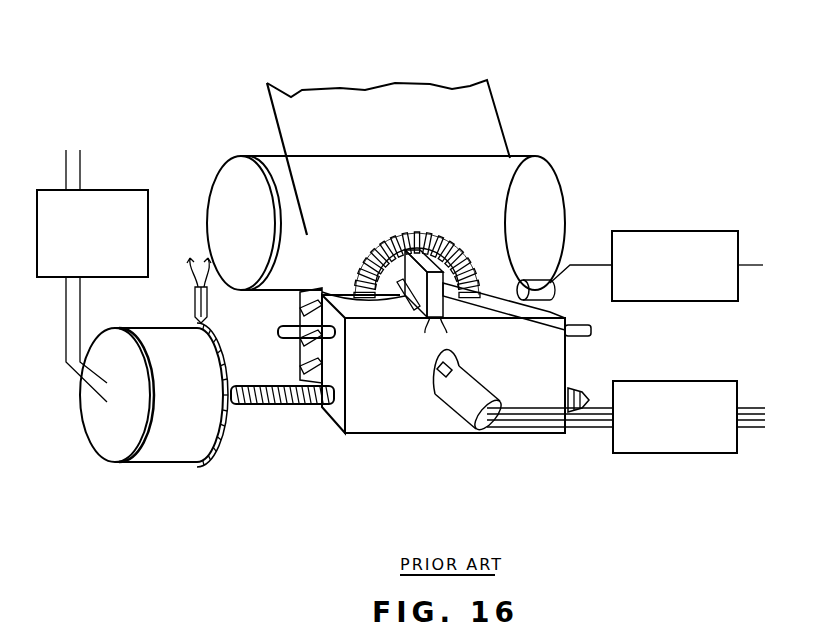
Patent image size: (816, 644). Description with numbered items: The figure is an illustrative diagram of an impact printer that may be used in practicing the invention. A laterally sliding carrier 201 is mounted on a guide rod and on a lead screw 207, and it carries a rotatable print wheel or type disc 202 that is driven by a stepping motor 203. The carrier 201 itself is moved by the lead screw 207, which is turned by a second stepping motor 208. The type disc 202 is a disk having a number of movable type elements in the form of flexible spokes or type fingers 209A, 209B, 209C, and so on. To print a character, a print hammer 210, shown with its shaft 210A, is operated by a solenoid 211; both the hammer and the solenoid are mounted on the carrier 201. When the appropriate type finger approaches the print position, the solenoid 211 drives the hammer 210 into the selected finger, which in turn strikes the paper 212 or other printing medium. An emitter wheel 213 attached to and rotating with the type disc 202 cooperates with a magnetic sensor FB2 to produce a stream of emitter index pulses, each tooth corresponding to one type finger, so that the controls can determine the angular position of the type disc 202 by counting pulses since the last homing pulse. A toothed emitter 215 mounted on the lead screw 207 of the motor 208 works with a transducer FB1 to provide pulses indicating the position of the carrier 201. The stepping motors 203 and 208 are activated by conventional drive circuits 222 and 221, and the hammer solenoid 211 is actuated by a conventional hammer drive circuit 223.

The carrier 201 is at (360, 430).
The type disc 202 is at (494, 256).
The stepping motor 203 is at (448, 420).
The lead screw 207 is at (276, 402).
The stepping motor 208 is at (165, 448).
The type finger 209A is at (470, 248).
The type finger 209B is at (455, 230).
The type finger 209C is at (415, 215).
The print hammer 210 is at (490, 310).
The hammer shaft 210A is at (590, 332).
The solenoid 211 is at (556, 292).
The paper 212 is at (362, 95).
The emitter wheel 213 is at (305, 300).
The toothed emitter 215 is at (233, 413).
The drive circuit 221 is at (108, 195).
The drive circuit 222 is at (710, 445).
The hammer drive circuit 223 is at (697, 236).
The transducer FB1 is at (195, 300).
The magnetic sensor FB2 is at (392, 298).